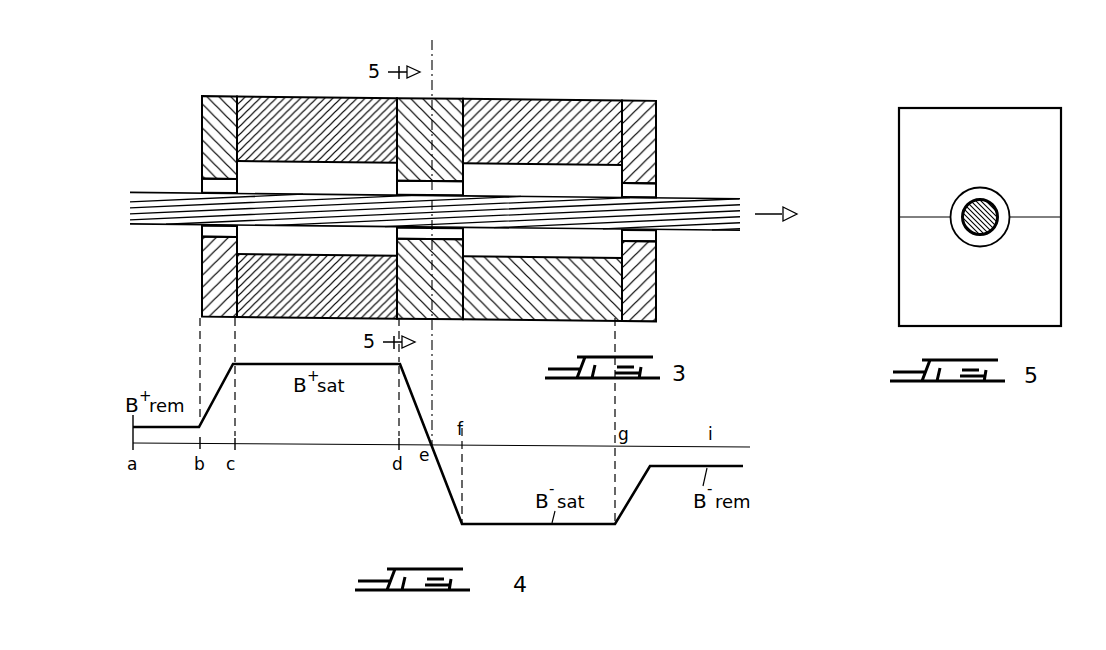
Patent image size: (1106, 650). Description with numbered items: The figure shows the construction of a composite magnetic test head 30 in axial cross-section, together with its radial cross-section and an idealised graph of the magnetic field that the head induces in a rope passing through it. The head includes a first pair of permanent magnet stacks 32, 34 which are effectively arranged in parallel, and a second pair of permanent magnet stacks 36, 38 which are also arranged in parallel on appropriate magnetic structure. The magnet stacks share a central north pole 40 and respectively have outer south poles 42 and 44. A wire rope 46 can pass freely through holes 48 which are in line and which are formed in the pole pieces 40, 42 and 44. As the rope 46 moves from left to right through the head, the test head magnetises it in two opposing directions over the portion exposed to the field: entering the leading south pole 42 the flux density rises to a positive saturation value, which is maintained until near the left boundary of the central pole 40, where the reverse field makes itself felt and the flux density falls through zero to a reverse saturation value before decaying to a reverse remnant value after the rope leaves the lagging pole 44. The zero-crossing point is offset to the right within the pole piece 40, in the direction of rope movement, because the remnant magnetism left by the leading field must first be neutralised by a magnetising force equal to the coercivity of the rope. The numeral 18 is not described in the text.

In FIG. 3, the composite magnetic test head 30 is at (463, 183).
In FIG. 3, the permanent magnet stack 32 is at (310, 100).
In FIG. 3, the permanent magnet stack 34 is at (302, 308).
In FIG. 3, the permanent magnet stack 36 is at (547, 98).
In FIG. 3, the permanent magnet stack 38 is at (568, 305).
In FIG. 3, the central north pole 40 is at (452, 98).
In FIG. 5, the central north pole 40 is at (1052, 132).
In FIG. 3, the outer south pole 42 is at (212, 292).
In FIG. 3, the outer south pole 44 is at (641, 293).
In FIG. 5, the wire rope 46 is at (973, 228).
In FIG. 3, the holes 48 is at (198, 184).
In FIG. 5, the holes 48 is at (995, 203).
In FIG. 3, the wire 18 is at (466, 231).